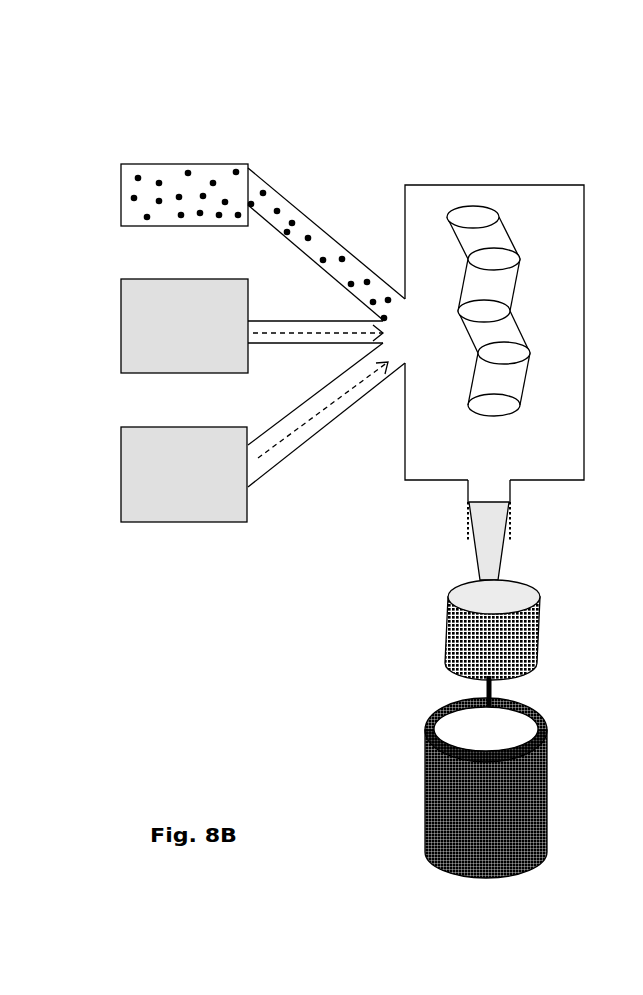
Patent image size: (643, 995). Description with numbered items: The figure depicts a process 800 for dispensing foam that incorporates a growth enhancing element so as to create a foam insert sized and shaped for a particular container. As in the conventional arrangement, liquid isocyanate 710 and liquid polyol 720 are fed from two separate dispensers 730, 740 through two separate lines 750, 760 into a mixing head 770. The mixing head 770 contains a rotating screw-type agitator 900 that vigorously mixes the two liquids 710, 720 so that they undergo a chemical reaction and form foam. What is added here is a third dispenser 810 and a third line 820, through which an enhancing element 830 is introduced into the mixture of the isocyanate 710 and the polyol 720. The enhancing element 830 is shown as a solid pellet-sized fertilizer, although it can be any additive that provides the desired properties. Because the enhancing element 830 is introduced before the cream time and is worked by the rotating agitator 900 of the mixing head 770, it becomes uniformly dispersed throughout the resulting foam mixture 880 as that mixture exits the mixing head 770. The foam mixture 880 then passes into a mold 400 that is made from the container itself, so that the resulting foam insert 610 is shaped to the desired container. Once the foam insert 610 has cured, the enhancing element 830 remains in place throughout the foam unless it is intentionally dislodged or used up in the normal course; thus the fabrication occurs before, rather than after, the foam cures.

The process 800 is at (566, 79).
The third dispenser 810 is at (147, 187).
The enhancing element 830 is at (225, 202).
The third line 820 is at (322, 243).
The mixing head 770 is at (553, 207).
The rotating screw-type agitator 900 is at (497, 288).
The dispenser 730 is at (121, 310).
The liquid isocyanate 710 is at (147, 349).
The line 750 is at (293, 333).
The line 760 is at (327, 410).
The dispenser 740 is at (248, 512).
The liquid polyol 720 is at (150, 492).
The foam mixture 880 is at (493, 550).
The foam insert 610 is at (522, 630).
The mold 400 is at (450, 807).